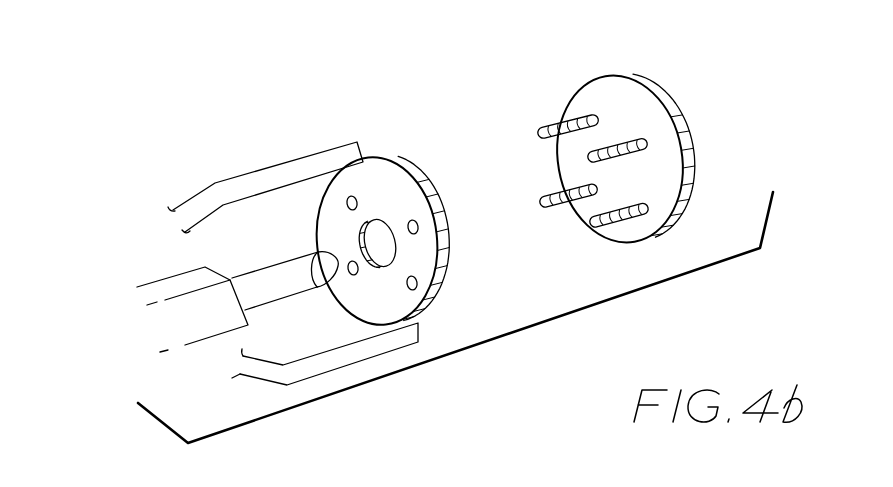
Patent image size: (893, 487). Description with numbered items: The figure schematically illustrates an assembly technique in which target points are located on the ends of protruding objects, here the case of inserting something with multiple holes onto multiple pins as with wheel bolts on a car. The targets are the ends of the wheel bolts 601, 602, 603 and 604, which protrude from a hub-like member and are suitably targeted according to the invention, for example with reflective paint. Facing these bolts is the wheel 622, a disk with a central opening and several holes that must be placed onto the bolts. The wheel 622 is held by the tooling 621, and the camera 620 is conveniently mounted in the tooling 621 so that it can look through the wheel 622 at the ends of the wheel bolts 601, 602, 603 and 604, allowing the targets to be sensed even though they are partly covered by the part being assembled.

The wheel bolt 601 is at (538, 128).
The wheel bolt 602 is at (640, 132).
The wheel bolt 603 is at (620, 228).
The wheel bolt 604 is at (540, 195).
The camera 620 is at (297, 218).
The tooling 621 is at (380, 342).
The wheel 622 is at (452, 245).